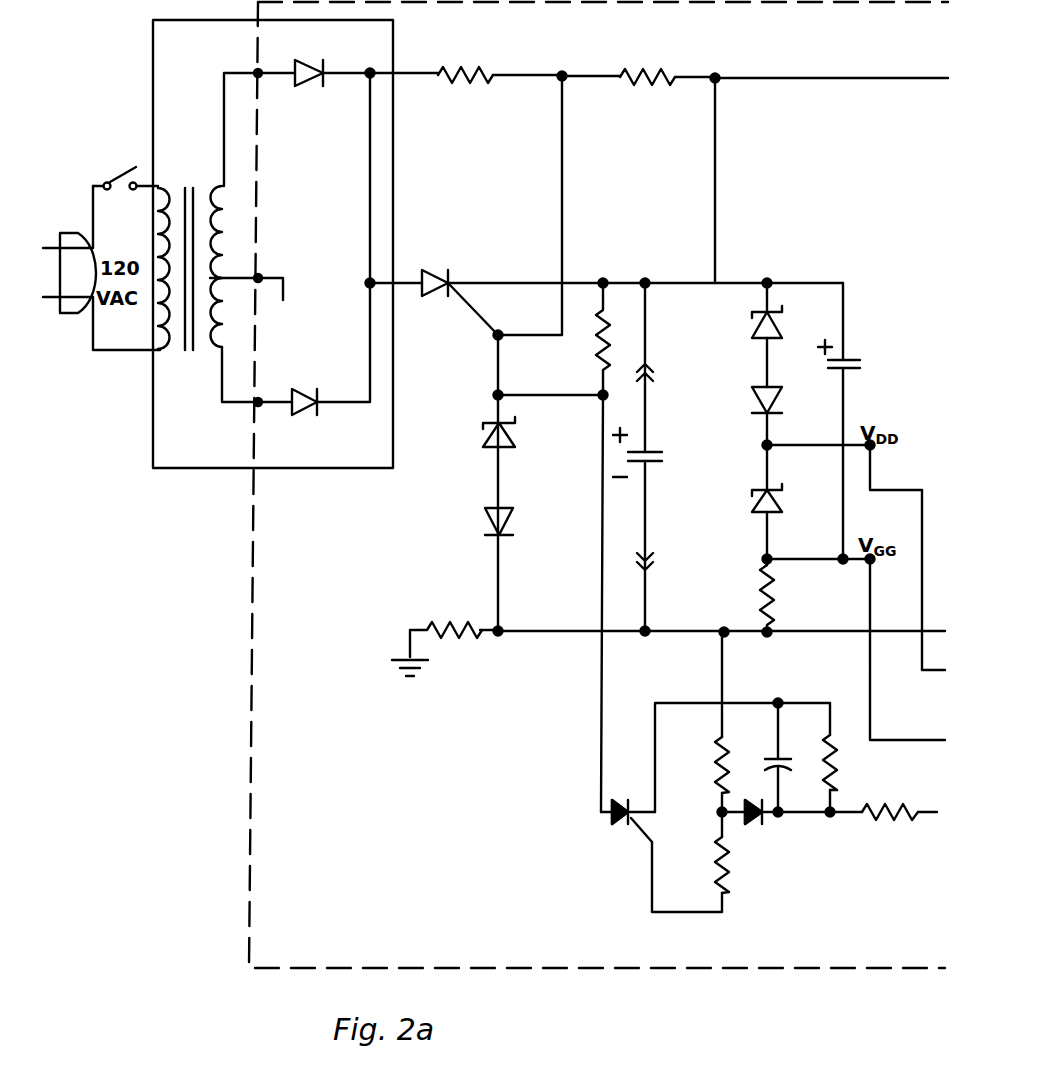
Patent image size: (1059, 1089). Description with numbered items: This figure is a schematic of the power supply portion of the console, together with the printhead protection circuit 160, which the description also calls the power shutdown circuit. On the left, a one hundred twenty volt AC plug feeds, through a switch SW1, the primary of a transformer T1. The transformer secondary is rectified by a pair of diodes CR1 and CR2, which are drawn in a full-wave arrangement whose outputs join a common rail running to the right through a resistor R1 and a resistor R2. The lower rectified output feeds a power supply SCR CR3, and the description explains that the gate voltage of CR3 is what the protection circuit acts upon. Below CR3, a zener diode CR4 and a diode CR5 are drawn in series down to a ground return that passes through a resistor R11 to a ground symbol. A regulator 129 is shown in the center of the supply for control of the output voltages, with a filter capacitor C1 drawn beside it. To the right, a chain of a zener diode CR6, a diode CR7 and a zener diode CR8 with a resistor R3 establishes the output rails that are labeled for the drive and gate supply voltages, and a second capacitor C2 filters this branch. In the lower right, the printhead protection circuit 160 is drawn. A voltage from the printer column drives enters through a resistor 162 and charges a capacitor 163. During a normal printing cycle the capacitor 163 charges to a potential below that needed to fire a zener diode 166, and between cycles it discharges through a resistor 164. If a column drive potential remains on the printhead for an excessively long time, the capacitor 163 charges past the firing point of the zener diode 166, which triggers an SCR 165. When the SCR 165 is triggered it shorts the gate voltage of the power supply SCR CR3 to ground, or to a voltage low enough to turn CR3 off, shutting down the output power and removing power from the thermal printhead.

The power switch SW1 is at (111, 170).
The transformer T1 is at (220, 253).
The rectifier diode CR1 is at (300, 88).
The rectifier diode CR2 is at (304, 416).
The power supply SCR CR3 is at (451, 302).
The zener diode CR4 is at (475, 423).
The diode CR5 is at (470, 522).
The zener diode CR6 is at (738, 321).
The diode CR7 is at (746, 386).
The zener diode CR8 is at (743, 487).
The resistor R1 is at (465, 63).
The resistor R2 is at (647, 64).
The resistor R3 is at (786, 598).
The resistor R11 is at (437, 635).
The filter capacitor C1 is at (651, 452).
The filter capacitor C2 is at (850, 421).
The regulator 129 is at (698, 358).
The printhead protection circuit 160 is at (764, 776).
The resistor 162 is at (876, 823).
The capacitor 163 is at (772, 760).
The resistor 164 is at (834, 768).
The SCR 165 is at (617, 823).
The zener diode 166 is at (751, 826).